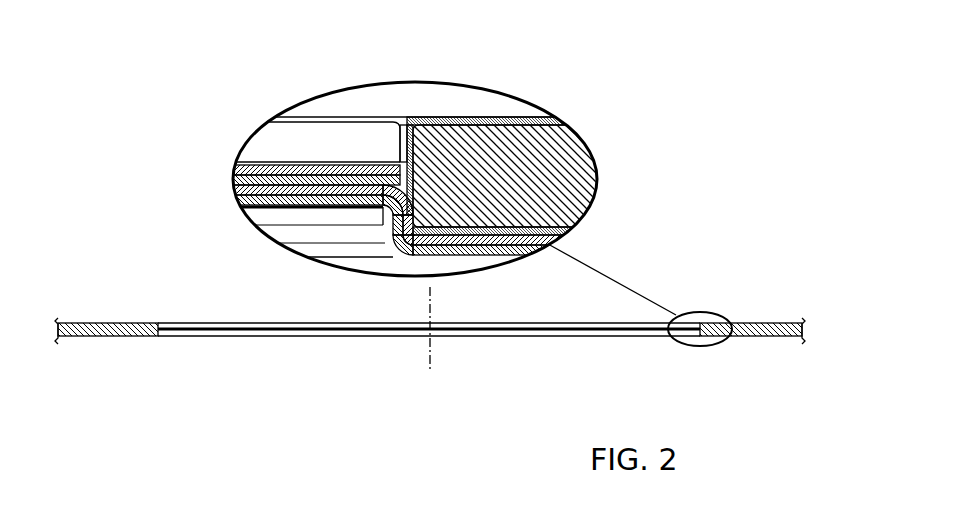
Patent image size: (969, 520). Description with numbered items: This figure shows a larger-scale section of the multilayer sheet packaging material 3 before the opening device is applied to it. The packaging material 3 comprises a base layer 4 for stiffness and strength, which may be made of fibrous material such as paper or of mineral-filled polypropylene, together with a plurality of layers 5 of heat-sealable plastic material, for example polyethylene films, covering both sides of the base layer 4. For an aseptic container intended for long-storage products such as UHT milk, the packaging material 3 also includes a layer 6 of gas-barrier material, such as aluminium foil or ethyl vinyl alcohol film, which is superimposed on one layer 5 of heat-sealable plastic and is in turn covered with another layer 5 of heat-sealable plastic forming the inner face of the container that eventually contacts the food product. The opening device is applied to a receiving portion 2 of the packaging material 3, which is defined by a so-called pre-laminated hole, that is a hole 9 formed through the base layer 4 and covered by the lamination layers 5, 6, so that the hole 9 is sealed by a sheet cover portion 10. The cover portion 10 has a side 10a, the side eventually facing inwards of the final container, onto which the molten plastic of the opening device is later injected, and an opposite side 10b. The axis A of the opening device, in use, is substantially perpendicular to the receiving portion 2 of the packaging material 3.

The receiving portion 2 is at (303, 157).
The multilayer sheet packaging material 3 is at (592, 136).
The base layer 4 is at (567, 178).
The layers of heat-sealable plastic material 5 is at (568, 231).
The layer of gas-barrier material 6 is at (537, 240).
The hole 9 is at (401, 139).
The sheet cover portion 10 is at (276, 206).
The side of cover portion 10a is at (351, 210).
The upper layer 10b is at (366, 156).
The axis A is at (430, 348).